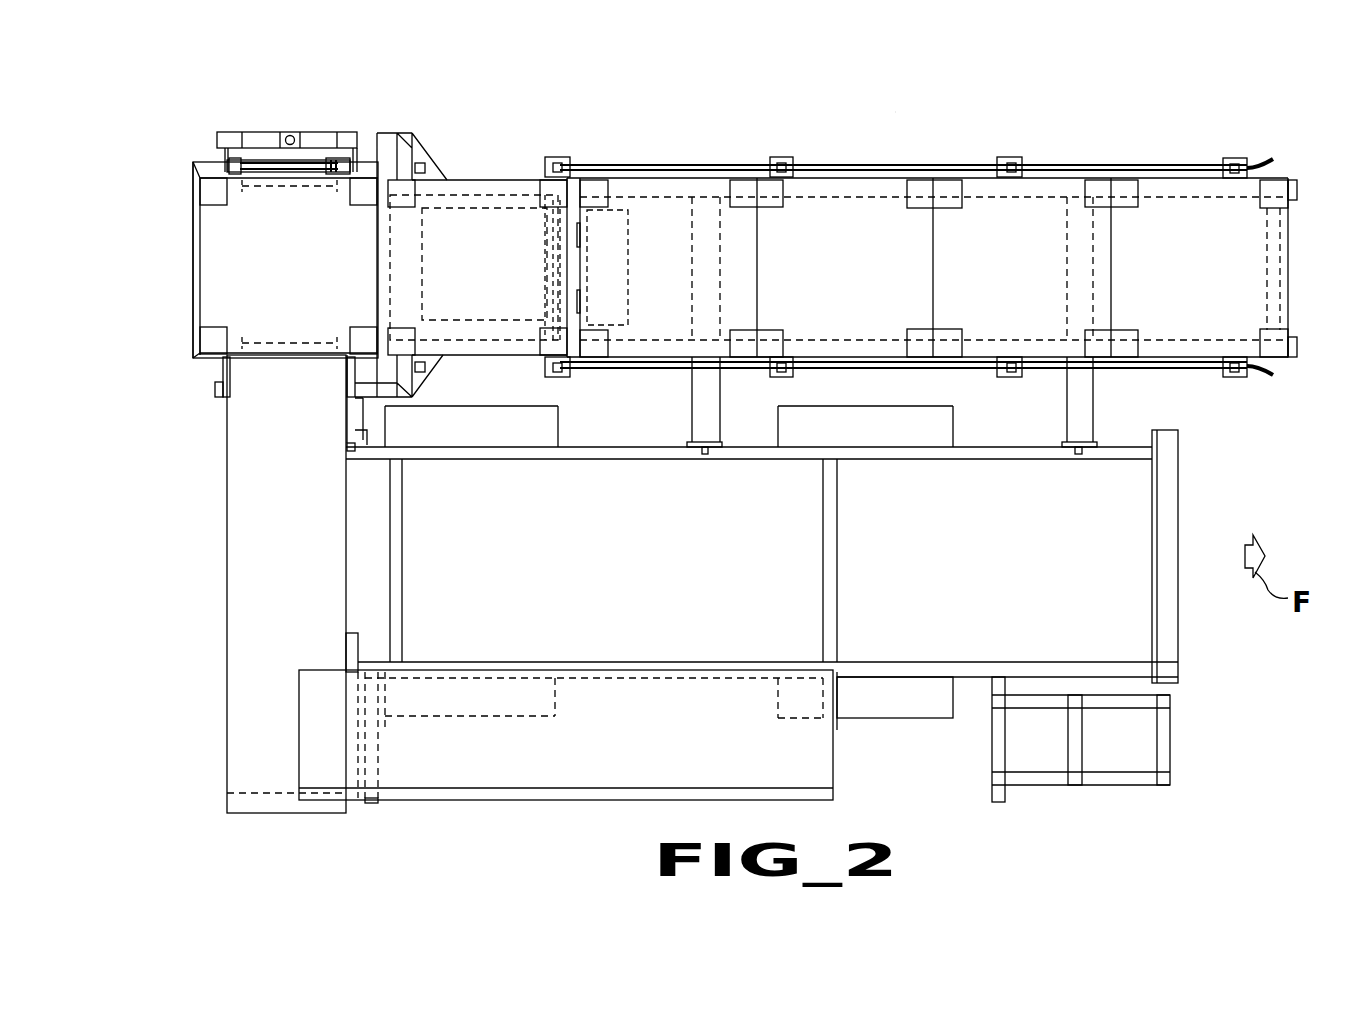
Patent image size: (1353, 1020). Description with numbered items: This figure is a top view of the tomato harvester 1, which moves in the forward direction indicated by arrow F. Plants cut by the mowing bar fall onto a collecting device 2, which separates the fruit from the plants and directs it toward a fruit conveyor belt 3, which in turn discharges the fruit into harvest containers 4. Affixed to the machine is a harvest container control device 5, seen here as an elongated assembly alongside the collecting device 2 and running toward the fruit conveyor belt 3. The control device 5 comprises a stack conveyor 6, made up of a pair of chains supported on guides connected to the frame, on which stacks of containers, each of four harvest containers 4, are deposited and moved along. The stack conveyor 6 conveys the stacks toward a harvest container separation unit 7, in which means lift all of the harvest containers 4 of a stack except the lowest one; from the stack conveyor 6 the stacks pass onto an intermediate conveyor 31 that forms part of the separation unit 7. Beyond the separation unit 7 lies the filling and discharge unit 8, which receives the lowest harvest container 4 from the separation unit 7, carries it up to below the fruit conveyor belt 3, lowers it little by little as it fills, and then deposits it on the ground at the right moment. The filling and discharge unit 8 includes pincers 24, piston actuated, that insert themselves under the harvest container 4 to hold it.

The tomato harvester 1 is at (895, 112).
The collecting device 2 is at (1143, 568).
The fruit conveyor belt 3 is at (245, 565).
The harvest containers 4 is at (213, 262).
The harvest container control device 5 is at (1266, 394).
The stack conveyor 6 is at (1240, 272).
The harvest container separation unit 7 is at (452, 167).
The filling and discharge unit 8 is at (175, 132).
The pincers 24 is at (355, 150).
The intermediate conveyor 31 is at (458, 312).